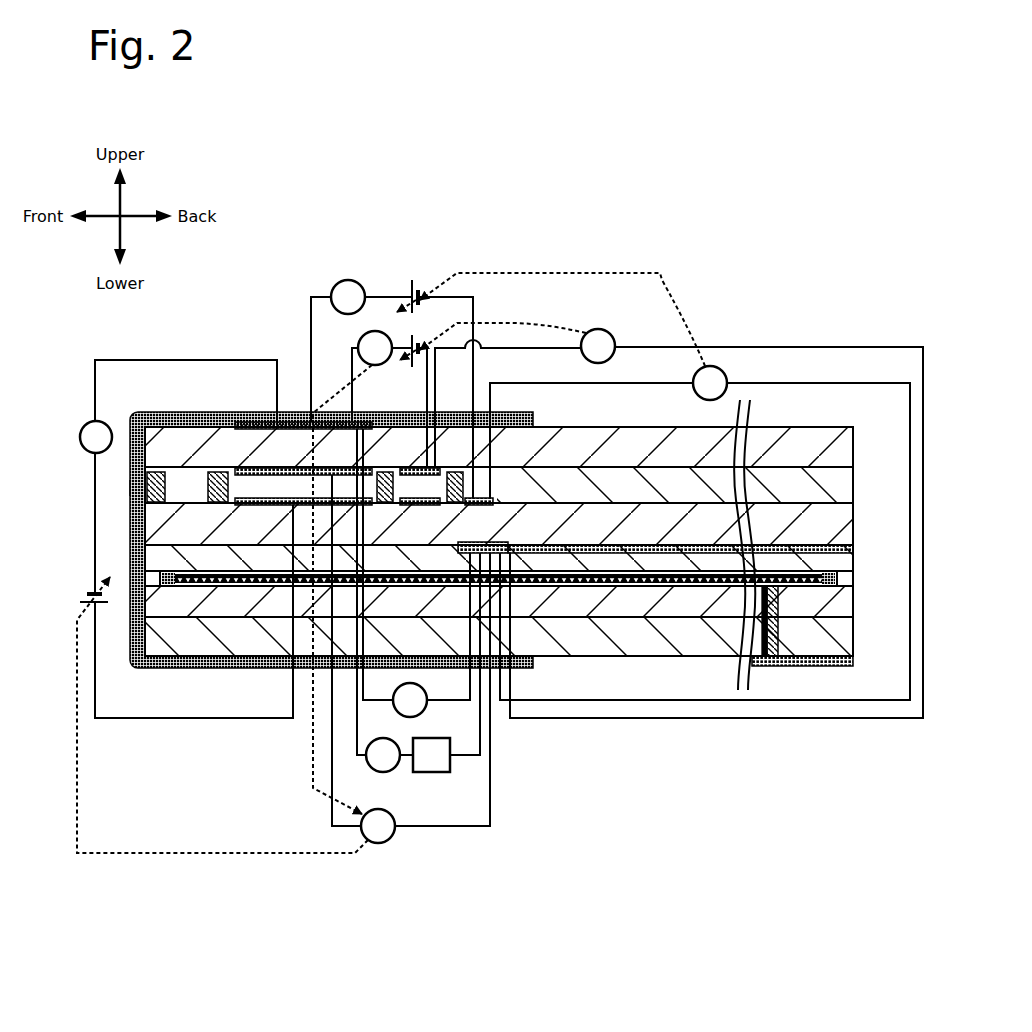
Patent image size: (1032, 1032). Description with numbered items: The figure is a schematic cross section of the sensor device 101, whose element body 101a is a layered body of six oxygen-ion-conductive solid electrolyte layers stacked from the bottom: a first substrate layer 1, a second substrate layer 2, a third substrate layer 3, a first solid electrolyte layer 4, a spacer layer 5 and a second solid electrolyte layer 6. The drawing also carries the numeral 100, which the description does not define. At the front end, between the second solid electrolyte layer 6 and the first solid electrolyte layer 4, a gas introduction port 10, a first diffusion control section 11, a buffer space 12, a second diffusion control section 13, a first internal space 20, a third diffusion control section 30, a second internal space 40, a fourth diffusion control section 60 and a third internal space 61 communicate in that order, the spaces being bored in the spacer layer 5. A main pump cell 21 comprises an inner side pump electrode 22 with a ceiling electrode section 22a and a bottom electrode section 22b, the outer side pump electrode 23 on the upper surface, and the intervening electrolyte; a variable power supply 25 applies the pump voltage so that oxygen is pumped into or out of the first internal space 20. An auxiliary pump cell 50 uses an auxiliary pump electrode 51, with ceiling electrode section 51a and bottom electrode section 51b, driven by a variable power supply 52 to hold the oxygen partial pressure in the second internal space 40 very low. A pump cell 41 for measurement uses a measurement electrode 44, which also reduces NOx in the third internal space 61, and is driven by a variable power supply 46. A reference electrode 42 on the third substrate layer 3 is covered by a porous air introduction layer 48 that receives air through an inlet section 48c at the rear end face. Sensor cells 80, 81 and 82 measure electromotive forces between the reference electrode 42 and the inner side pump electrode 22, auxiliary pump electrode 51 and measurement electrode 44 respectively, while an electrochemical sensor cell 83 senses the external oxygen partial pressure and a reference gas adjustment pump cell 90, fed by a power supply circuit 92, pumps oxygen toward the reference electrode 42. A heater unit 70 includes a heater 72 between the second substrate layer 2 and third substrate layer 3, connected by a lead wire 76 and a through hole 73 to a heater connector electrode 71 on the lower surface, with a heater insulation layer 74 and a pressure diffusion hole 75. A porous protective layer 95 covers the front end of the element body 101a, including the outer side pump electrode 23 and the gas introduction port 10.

The first substrate layer 1 is at (855, 634).
The second substrate layer 2 is at (855, 603).
The third substrate layer 3 is at (150, 557).
The first solid electrolyte layer 4 is at (150, 520).
The spacer layer 5 is at (855, 476).
The second solid electrolyte layer 6 is at (855, 445).
The gas introduction port 10 is at (145, 489).
The first diffusion control section 11 is at (152, 470).
The buffer space 12 is at (186, 470).
The second diffusion control section 13 is at (218, 470).
The first internal space 20 is at (338, 482).
The main pump cell 21 is at (180, 360).
The inner side pump electrode 22 is at (292, 468).
The ceiling electrode section 22a is at (320, 468).
The bottom electrode section 22b is at (285, 500).
The outer side pump electrode 23 is at (240, 422).
The variable power supply 25 is at (82, 600).
The third diffusion control section 30 is at (385, 472).
The second internal space 40 is at (405, 468).
The pump cell for measurement 41 is at (338, 284).
The reference electrode 42 is at (500, 544).
The measurement electrode 44 is at (480, 505).
The variable power supply 46 is at (414, 282).
The air introduction layer 48 is at (827, 540).
The inlet section 48c is at (856, 548).
The auxiliary pump cell 50 is at (358, 342).
The auxiliary pump electrode 51 is at (425, 468).
The ceiling electrode section 51a is at (438, 468).
The bottom electrode section 51b is at (420, 505).
The variable power supply 52 is at (418, 356).
The fourth diffusion control section 60 is at (455, 472).
The third internal space 61 is at (500, 492).
The heater unit 70 is at (840, 578).
The heater connector electrode 71 is at (855, 660).
The heater 72 is at (190, 586).
The through hole 73 is at (772, 632).
The heater insulation layer 74 is at (168, 586).
The pressure diffusion hole 75 is at (700, 586).
The lead wire 76 is at (588, 586).
The oxygen partial pressure detection sensor cell for main pump control 80 is at (408, 832).
The oxygen partial pressure detection sensor cell for auxiliary pump control 81 is at (760, 345).
The oxygen partial pressure detection sensor cell for measurement pump control 82 is at (766, 382).
The electrochemical sensor cell 83 is at (432, 707).
The reference gas adjustment pump cell 90 is at (458, 760).
The power supply circuit 92 is at (442, 773).
The porous protective layer 95 is at (130, 418).
The gas sensor 100 is at (848, 180).
The sensor device 101 is at (788, 250).
The element body 101a is at (811, 405).